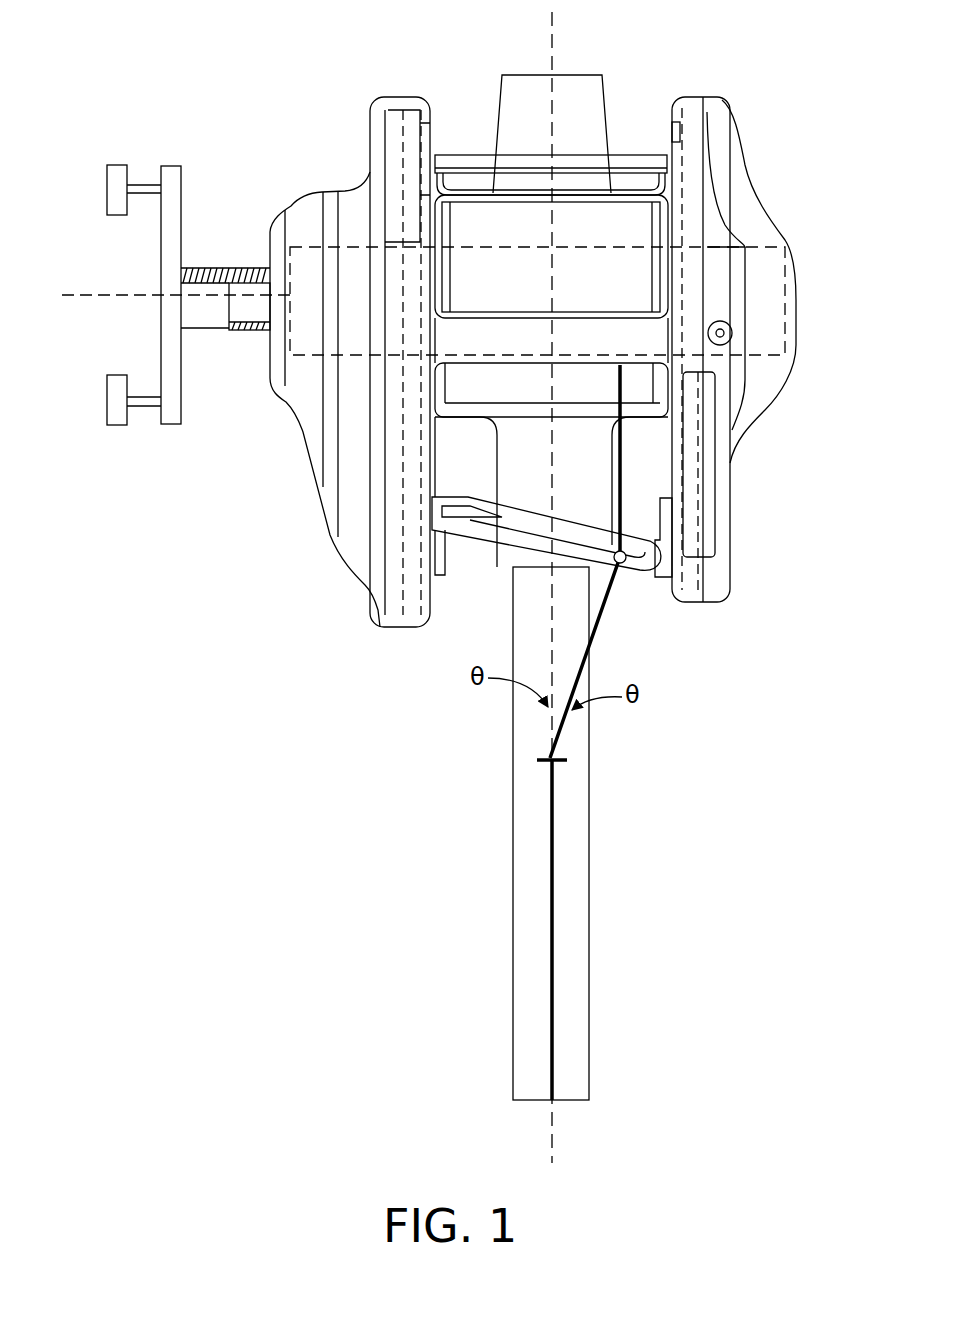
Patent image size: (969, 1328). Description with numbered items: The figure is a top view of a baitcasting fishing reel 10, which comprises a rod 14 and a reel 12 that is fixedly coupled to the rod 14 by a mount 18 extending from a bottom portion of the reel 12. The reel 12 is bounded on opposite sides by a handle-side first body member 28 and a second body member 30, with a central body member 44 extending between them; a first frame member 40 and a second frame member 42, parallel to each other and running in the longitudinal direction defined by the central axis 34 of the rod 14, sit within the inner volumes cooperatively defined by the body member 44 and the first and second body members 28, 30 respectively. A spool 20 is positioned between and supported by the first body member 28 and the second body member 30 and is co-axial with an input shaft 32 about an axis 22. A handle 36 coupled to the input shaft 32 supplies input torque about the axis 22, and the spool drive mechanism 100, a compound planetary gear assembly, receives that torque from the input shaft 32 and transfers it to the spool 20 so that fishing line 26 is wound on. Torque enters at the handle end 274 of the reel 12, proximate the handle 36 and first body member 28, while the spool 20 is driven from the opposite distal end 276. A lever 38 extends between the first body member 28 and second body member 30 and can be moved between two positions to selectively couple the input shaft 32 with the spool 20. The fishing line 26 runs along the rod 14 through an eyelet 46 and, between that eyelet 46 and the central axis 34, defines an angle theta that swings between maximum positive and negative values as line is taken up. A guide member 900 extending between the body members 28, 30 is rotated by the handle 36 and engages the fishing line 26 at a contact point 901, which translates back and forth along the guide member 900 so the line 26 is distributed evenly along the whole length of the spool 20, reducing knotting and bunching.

The fishing reel 10 is at (145, 128).
The reel 12 is at (753, 65).
The rod 14 is at (590, 885).
The mount 18 is at (583, 97).
The spool 20 is at (487, 197).
The axis 22 is at (100, 296).
The fishing line 26 is at (605, 628).
The first body member 28 is at (316, 432).
The second body member 30 is at (768, 402).
The input shaft 32 is at (258, 330).
The central axis 34 is at (552, 1140).
The handle 36 is at (172, 426).
The lever 38 is at (505, 162).
The first frame member 40 is at (413, 630).
The second frame member 42 is at (700, 582).
The body member 44 is at (432, 598).
The eyelet 46 is at (548, 757).
The spool drive mechanism 100 is at (465, 247).
The handle end 274 is at (262, 175).
The distal end 276 is at (803, 173).
The guide member 900 is at (455, 533).
The contact point 901 is at (628, 566).